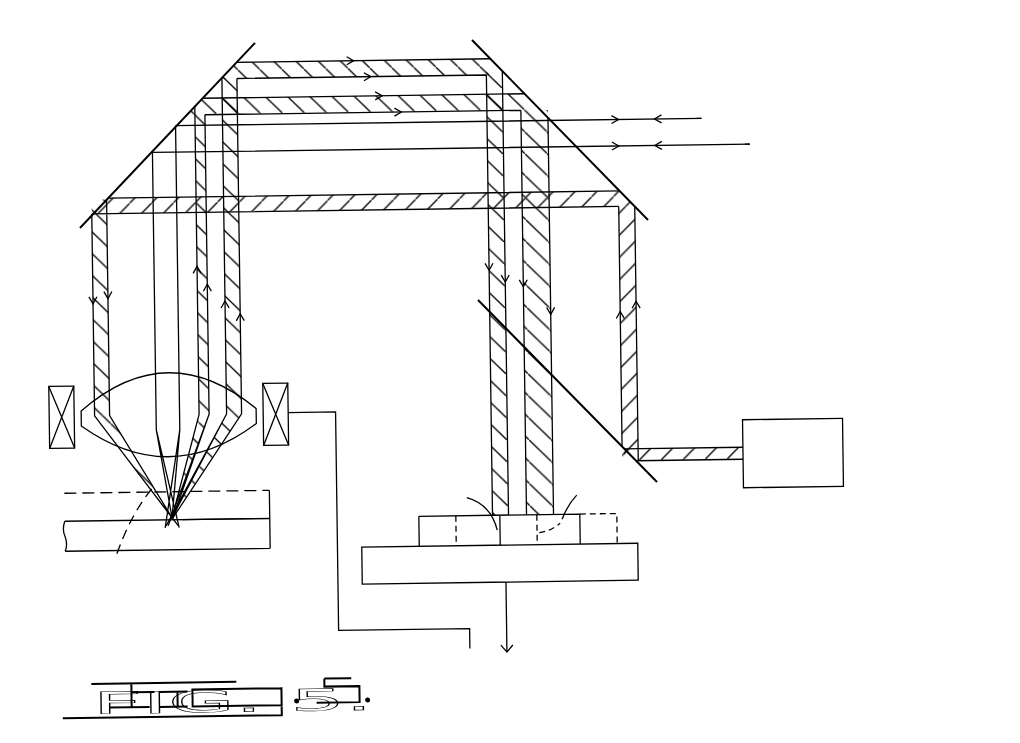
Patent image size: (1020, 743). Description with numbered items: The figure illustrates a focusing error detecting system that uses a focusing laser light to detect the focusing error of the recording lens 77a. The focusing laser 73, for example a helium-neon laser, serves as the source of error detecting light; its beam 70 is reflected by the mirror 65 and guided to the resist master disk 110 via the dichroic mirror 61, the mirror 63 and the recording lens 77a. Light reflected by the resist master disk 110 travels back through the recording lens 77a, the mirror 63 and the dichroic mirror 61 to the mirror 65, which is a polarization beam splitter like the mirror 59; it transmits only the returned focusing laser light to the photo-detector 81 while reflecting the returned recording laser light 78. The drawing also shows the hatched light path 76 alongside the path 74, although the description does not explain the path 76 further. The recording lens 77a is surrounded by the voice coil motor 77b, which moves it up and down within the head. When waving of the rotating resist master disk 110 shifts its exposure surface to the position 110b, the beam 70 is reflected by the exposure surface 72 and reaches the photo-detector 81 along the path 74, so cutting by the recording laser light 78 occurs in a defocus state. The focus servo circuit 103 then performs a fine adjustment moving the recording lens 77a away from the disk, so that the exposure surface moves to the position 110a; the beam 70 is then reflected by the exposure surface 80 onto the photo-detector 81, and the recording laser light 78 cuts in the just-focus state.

The mirror 63 is at (226, 73).
The dichroic mirror 61 is at (486, 50).
The light beam 76 is at (397, 66).
The reflected focusing laser light path 74 is at (303, 100).
The recording laser light 78 is at (460, 292).
The mirror 59 is at (725, 149).
The mirror 65 is at (474, 295).
The beam of the focusing laser 70 is at (637, 370).
The focusing laser 73 is at (790, 423).
The recording lens 77a is at (248, 396).
The voice coil motor 77b is at (289, 389).
The resist master disk 110 is at (220, 538).
The exposure surface position 110a is at (273, 516).
The shifted exposure surface position 110b is at (272, 490).
The exposure surface 72 is at (124, 540).
The exposure surface 80 is at (167, 514).
The photo-detector 81 is at (552, 583).
The focus servo circuit 103 is at (590, 632).